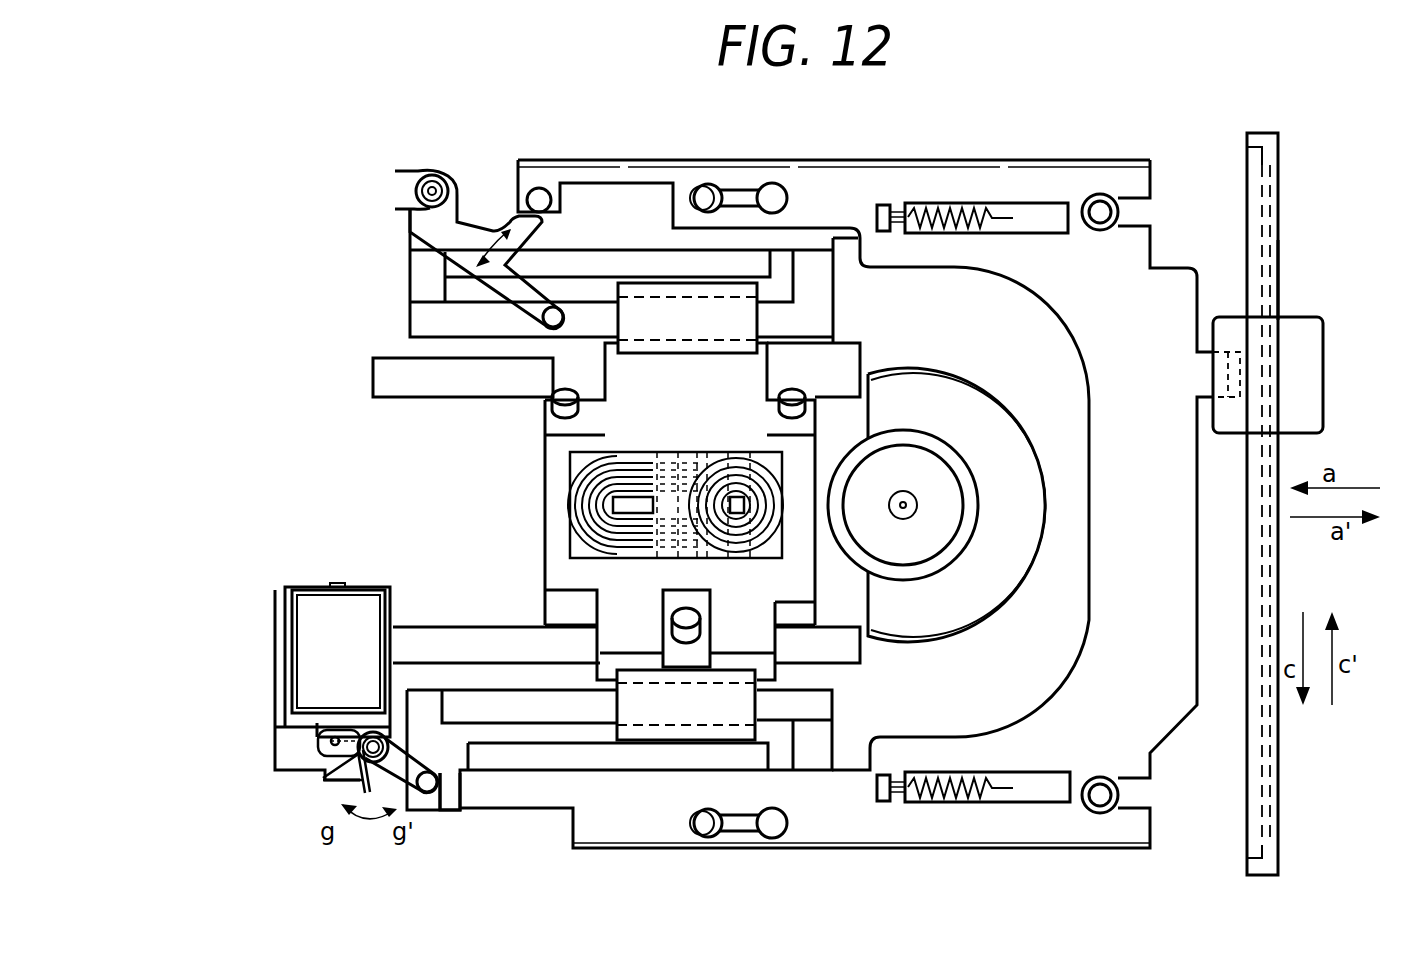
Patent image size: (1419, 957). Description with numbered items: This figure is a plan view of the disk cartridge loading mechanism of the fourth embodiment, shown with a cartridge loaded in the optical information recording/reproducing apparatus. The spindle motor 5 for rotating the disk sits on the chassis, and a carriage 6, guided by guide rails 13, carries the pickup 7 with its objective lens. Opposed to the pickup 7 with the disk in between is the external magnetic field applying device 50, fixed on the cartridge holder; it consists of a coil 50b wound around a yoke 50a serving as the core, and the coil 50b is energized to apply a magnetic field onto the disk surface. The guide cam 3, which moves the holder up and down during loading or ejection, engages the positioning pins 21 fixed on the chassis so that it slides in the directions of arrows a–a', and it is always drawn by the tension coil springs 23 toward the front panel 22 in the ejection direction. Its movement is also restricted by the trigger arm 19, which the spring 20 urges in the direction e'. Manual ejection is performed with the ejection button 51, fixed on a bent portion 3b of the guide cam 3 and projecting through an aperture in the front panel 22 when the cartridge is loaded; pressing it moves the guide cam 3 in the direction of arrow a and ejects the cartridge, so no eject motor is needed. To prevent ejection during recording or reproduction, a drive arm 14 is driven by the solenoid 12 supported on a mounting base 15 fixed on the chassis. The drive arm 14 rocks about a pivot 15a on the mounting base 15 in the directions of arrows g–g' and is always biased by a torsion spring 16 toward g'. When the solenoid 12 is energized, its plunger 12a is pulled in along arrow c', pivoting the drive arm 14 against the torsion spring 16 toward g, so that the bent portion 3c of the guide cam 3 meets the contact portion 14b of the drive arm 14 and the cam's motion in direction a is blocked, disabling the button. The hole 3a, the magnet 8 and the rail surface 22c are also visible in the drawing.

The guide cam 3 is at (1190, 713).
The hole in frame 3a is at (545, 192).
The bent portion of guide cam 3b is at (1237, 372).
The bent portion of guide cam 3c is at (463, 790).
The spindle motor 5 is at (972, 412).
The carriage 6 is at (748, 388).
The pickup 7 is at (737, 468).
The electromagnet 8 is at (645, 717).
The solenoid 12 is at (315, 625).
The plunger 12a is at (317, 750).
The guide rails 13 is at (395, 370).
The drive arm 14 is at (424, 726).
The contact portion of drive arm 14b is at (428, 792).
The mounting base 15 is at (283, 692).
The pivot 15a is at (330, 778).
The torsion spring 16 is at (398, 753).
The trigger arm 19 is at (470, 226).
The spring 20 is at (405, 175).
The positioning pins 21 is at (710, 195).
The front panel 22 is at (1265, 200).
The rail surface 22c is at (1278, 310).
The tension coil springs 23 is at (945, 205).
The external magnetic field applying device 50 is at (611, 495).
The yoke 50a is at (628, 510).
The coil 50b is at (578, 472).
The ejection button 51 is at (1325, 333).